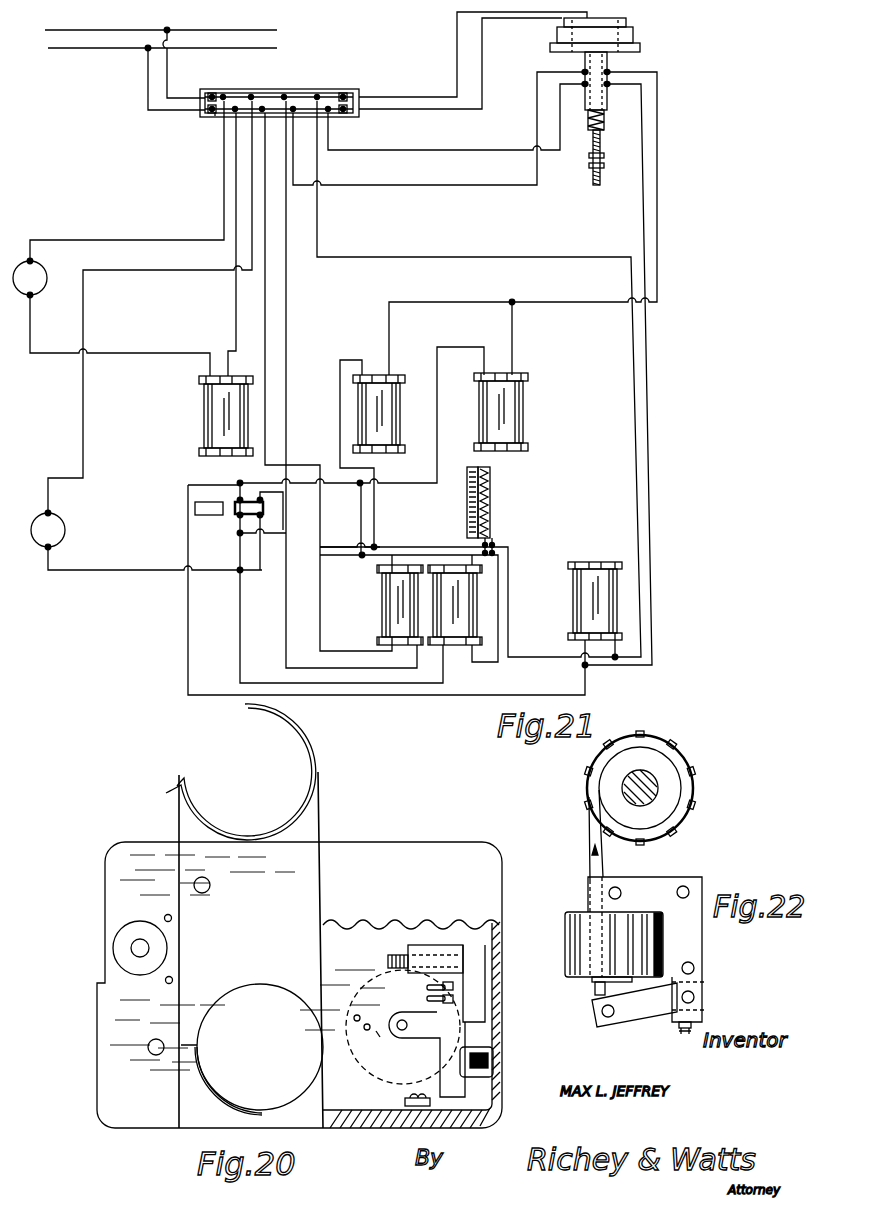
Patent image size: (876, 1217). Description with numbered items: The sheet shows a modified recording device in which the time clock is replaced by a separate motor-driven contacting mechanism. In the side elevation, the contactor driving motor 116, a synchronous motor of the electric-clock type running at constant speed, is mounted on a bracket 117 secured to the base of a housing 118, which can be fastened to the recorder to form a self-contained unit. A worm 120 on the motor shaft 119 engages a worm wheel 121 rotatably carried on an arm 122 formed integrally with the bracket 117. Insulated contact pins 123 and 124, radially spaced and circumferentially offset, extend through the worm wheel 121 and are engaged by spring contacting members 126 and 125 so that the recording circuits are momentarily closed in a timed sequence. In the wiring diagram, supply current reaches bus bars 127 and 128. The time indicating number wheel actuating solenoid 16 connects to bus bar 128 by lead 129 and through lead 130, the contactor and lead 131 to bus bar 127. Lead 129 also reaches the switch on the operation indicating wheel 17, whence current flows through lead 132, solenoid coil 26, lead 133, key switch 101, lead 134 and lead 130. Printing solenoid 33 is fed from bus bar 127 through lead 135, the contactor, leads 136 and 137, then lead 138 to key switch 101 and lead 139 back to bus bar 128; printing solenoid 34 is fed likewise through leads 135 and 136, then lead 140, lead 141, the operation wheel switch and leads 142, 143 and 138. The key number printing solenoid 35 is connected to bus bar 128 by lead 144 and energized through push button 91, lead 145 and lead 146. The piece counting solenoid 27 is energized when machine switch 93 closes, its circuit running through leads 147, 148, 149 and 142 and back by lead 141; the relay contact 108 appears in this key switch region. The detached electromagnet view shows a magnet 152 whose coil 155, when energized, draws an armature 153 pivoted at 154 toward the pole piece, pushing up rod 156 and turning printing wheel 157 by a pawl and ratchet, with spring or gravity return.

In FIG. 21, the bus bar 128 is at (238, 95).
In FIG. 21, the bus bar 127 is at (213, 115).
In FIG. 21, the lead 131 is at (440, 150).
In FIG. 21, the lead 135 is at (440, 185).
In FIG. 21, the lead 136 is at (658, 215).
In FIG. 21, the contactor driving motor 116 is at (640, 33).
In FIG. 20, the contactor driving motor 116 is at (486, 985).
In FIG. 21, the spring contacting member 126 is at (608, 72).
In FIG. 20, the spring contacting member 126 is at (427, 987).
In FIG. 21, the spring contacting member 125 is at (608, 86).
In FIG. 20, the spring contacting member 125 is at (427, 998).
In FIG. 21, the contact pin 123 is at (590, 167).
In FIG. 20, the contact pin 123 is at (355, 1018).
In FIG. 21, the contact pin 124 is at (601, 158).
In FIG. 20, the contact pin 124 is at (367, 1030).
In FIG. 21, the lead 144 is at (125, 240).
In FIG. 21, the push button 91 is at (44, 270).
In FIG. 21, the lead 146 is at (236, 305).
In FIG. 21, the lead 141 is at (268, 318).
In FIG. 21, the lead 145 is at (148, 353).
In FIG. 21, the lead 139 is at (290, 345).
In FIG. 21, the lead 147 is at (85, 420).
In FIG. 21, the key number printing solenoid 35 is at (204, 415).
In FIG. 21, the lead 140 is at (340, 425).
In FIG. 21, the printing solenoid 34 is at (392, 375).
In FIG. 21, the lead 137 is at (512, 345).
In FIG. 21, the printing solenoid 33 is at (527, 405).
In FIG. 21, the lead 138 is at (435, 455).
In FIG. 21, the lead 129 is at (633, 420).
In FIG. 21, the operation indicating wheel 17 is at (491, 492).
In FIG. 21, the lead 130 is at (650, 525).
In FIG. 21, the time indicating number wheel actuating solenoid 16 is at (590, 565).
In FIG. 21, the lead 132 is at (508, 580).
In FIG. 21, the solenoid coil 26 is at (445, 565).
In FIG. 21, the piece counting number wheel actuating solenoid 27 is at (380, 624).
In FIG. 21, the lead 142 is at (322, 605).
In FIG. 21, the lead 143 is at (367, 520).
In FIG. 21, the key switch 101 is at (232, 495).
In FIG. 21, the relay contact 108 is at (258, 500).
In FIG. 21, the machine switch 93 is at (66, 530).
In FIG. 21, the lead 148 is at (122, 570).
In FIG. 21, the lead 149 is at (287, 608).
In FIG. 21, the lead 134 is at (187, 630).
In FIG. 21, the lead 133 is at (360, 697).
In FIG. 20, the bracket 117 is at (493, 1095).
In FIG. 20, the housing 118 is at (503, 1030).
In FIG. 20, the worm 120 is at (395, 948).
In FIG. 20, the motor shaft 119 is at (440, 950).
In FIG. 20, the arm 122 is at (423, 1025).
In FIG. 20, the worm wheel 121 is at (382, 1062).
In FIG. 22, the printing wheel 157 is at (660, 740).
In FIG. 22, the rod 156 is at (590, 830).
In FIG. 22, the magnet coil 155 is at (578, 915).
In FIG. 22, the magnet 152 is at (672, 875).
In FIG. 22, the pivot 154 is at (692, 997).
In FIG. 22, the armature 153 is at (632, 1015).